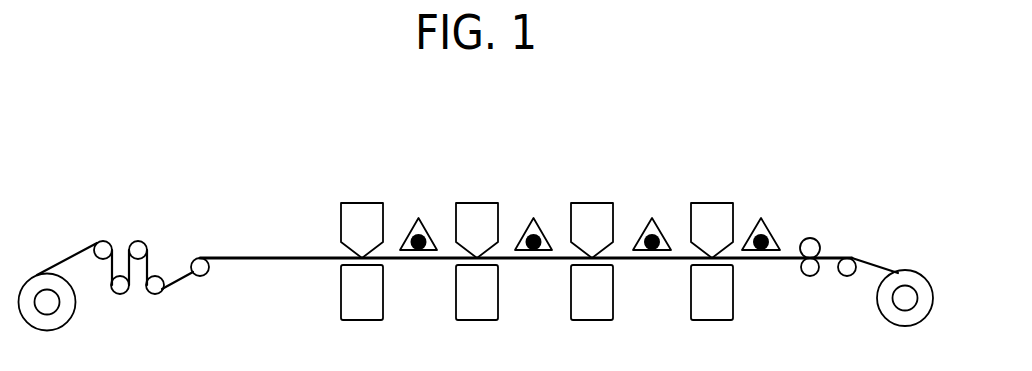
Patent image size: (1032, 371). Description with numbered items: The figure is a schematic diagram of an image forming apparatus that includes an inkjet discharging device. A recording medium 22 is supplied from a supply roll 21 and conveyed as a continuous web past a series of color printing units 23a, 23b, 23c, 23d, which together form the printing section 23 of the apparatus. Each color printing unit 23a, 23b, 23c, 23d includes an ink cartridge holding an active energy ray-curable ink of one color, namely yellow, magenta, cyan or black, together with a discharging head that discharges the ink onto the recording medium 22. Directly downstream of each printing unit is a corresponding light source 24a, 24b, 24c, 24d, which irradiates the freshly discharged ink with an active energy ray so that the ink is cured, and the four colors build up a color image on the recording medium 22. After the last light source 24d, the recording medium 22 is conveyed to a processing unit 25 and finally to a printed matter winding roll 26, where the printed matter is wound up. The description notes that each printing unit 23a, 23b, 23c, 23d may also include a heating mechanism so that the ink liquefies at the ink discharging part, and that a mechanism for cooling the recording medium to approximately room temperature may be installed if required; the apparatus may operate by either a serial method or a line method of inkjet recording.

The supply roll 21 is at (45, 308).
The recording medium 22 is at (250, 255).
The printing unit 23 is at (780, 145).
The color printing unit 23a is at (362, 212).
The color printing unit 23b is at (474, 212).
The color printing unit 23c is at (590, 212).
The color printing unit 23d is at (712, 212).
The light source 24a is at (423, 223).
The light source 24b is at (537, 223).
The light source 24c is at (657, 223).
The light source 24d is at (766, 223).
The processing unit 25 is at (810, 236).
The printed matter winding roll 26 is at (902, 302).